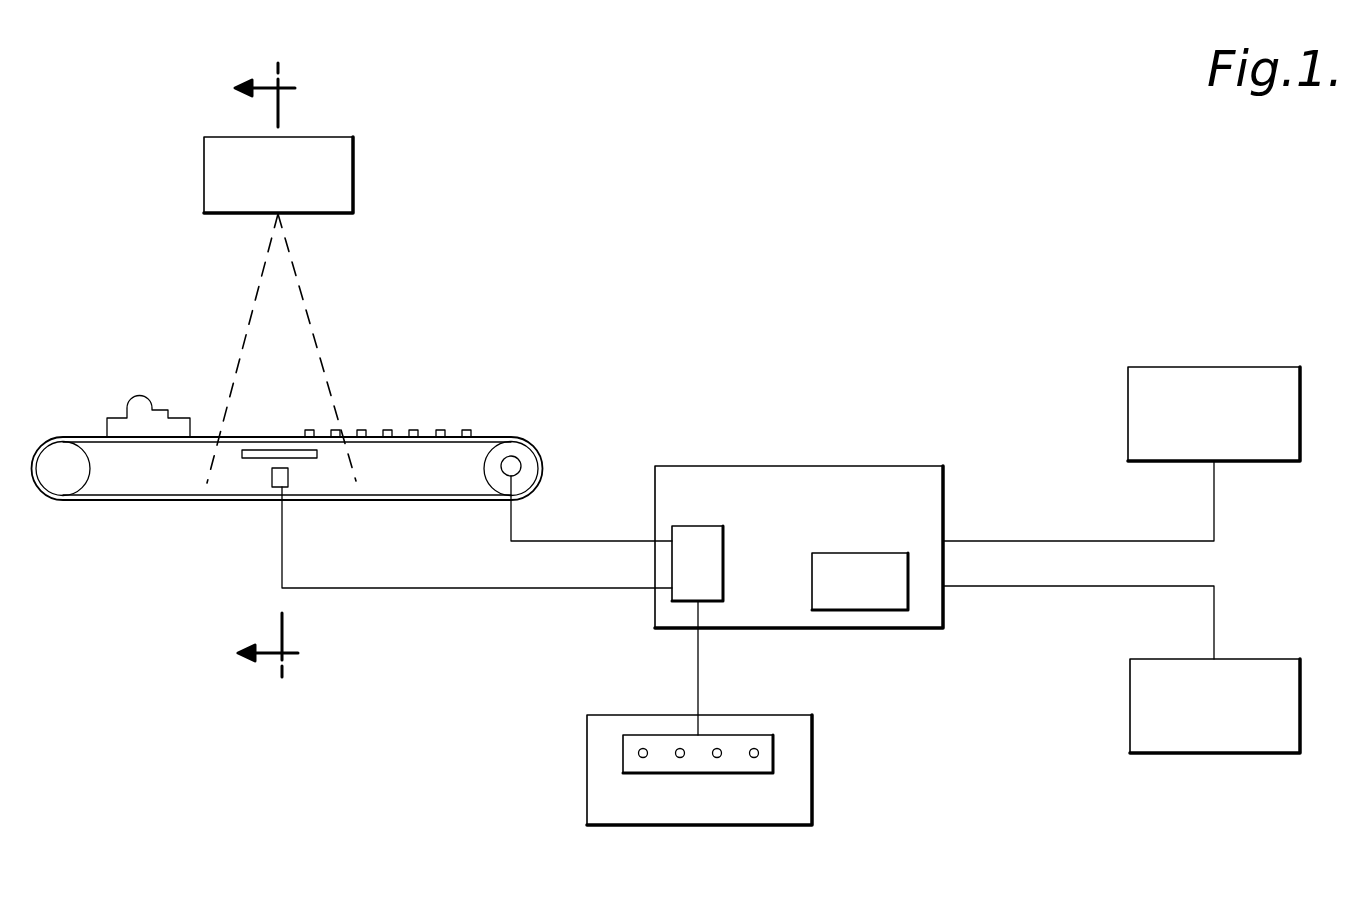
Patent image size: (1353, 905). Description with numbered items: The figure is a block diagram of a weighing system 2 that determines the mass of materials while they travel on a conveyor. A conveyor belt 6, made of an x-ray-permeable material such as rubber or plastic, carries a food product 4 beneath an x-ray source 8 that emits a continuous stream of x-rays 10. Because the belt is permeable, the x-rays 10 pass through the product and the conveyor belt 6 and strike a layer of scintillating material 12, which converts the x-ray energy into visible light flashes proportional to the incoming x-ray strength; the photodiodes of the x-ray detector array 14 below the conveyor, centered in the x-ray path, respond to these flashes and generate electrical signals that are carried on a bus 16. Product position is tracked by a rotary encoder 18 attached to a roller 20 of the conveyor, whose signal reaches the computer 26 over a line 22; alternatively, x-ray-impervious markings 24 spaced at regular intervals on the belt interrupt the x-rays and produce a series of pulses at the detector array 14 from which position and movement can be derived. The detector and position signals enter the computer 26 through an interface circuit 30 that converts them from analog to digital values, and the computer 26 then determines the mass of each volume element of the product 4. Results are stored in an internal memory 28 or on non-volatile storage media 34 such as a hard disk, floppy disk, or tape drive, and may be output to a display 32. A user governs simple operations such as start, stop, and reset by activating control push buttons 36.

The weighing system 2 is at (1032, 91).
The food product 4 is at (133, 401).
The conveyor belt 6 is at (486, 432).
The x-ray source 8 is at (353, 177).
The x-rays 10 is at (320, 343).
The scintillating material 12 is at (280, 449).
The x-ray detector array 14 is at (271, 481).
The bus 16 is at (560, 588).
The rotary encoder 18 is at (521, 466).
The roller 20 is at (528, 437).
The line 22 is at (511, 520).
The markings 24 is at (392, 428).
The computer 26 is at (798, 466).
The internal memory 28 is at (862, 610).
The interface circuit 30 is at (715, 601).
The display 32 is at (1213, 367).
The non-volatile storage media 34 is at (1213, 753).
The control push buttons 36 is at (773, 752).